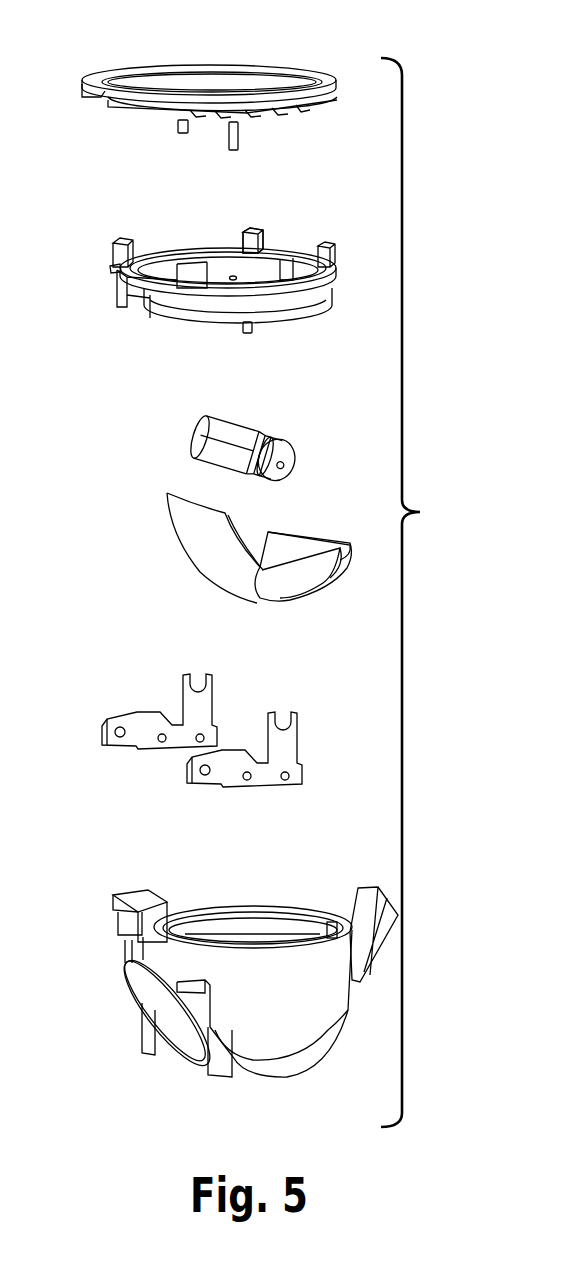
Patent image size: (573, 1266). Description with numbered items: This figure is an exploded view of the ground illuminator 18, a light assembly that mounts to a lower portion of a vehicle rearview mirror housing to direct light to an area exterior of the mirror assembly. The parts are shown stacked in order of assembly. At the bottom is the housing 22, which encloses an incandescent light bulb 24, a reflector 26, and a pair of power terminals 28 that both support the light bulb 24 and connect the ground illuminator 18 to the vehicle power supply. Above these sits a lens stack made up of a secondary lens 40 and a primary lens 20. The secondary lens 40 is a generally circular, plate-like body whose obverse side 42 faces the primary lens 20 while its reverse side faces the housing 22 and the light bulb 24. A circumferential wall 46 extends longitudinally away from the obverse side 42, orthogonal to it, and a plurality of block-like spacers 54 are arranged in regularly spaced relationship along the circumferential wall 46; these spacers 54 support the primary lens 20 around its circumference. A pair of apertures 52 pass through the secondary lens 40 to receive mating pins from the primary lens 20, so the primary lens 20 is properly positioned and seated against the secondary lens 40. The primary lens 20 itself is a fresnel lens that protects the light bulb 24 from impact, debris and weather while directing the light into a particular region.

The ground illuminator 18 is at (417, 592).
The primary lens 20 is at (205, 88).
The housing 22 is at (283, 1032).
The incandescent light bulb 24 is at (213, 435).
The reflector 26 is at (182, 529).
The power terminals 28 is at (137, 738).
The secondary lens 40 is at (183, 244).
The obverse side 42 is at (212, 260).
The circumferential wall 46 is at (147, 298).
The apertures 52 is at (183, 260).
The spacers 54 is at (257, 242).